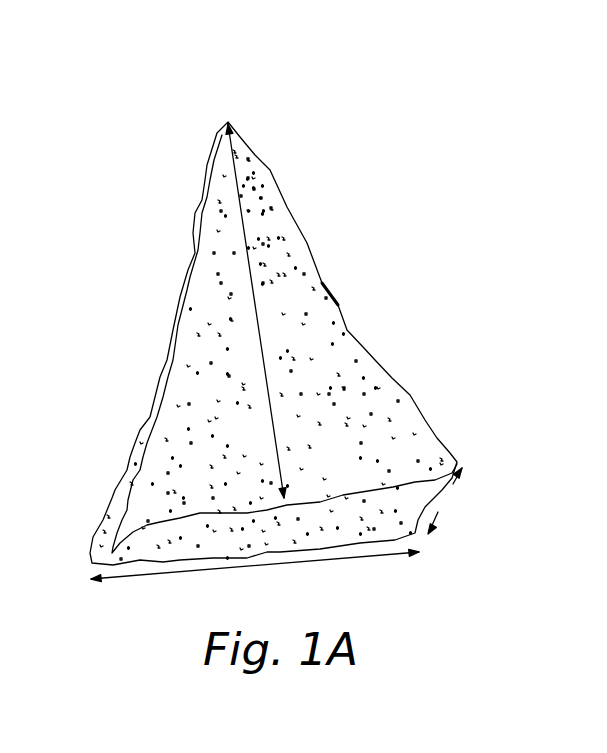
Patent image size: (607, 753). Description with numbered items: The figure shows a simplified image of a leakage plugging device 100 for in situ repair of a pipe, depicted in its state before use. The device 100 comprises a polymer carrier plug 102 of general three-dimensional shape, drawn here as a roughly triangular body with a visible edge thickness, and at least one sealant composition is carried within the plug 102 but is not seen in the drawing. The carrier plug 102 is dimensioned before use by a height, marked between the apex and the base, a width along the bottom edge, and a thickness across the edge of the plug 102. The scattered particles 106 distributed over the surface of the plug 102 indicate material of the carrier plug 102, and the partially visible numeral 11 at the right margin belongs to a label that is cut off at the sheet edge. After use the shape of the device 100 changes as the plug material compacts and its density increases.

The leakage plugging device 100 is at (427, 112).
The polymer carrier plug 102 is at (319, 265).
The inclusions / particles 106 is at (313, 340).
The truncated reference numeral 11 is at (592, 470).